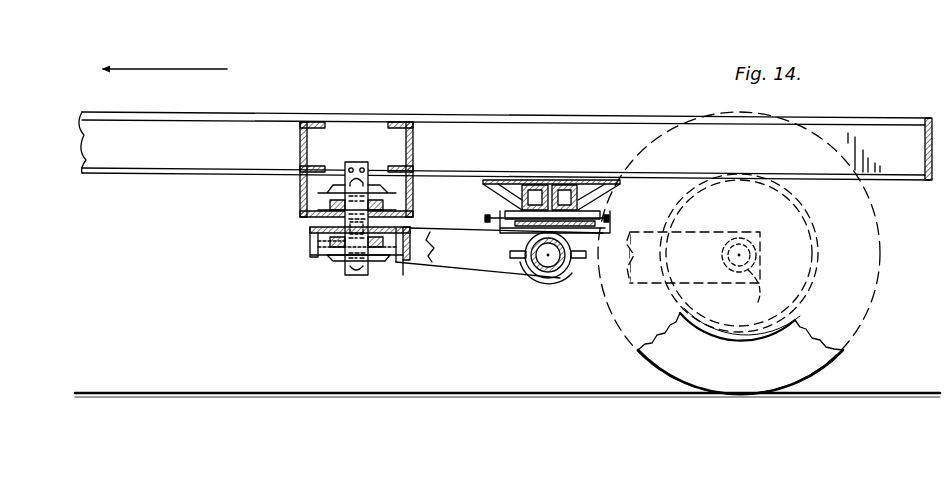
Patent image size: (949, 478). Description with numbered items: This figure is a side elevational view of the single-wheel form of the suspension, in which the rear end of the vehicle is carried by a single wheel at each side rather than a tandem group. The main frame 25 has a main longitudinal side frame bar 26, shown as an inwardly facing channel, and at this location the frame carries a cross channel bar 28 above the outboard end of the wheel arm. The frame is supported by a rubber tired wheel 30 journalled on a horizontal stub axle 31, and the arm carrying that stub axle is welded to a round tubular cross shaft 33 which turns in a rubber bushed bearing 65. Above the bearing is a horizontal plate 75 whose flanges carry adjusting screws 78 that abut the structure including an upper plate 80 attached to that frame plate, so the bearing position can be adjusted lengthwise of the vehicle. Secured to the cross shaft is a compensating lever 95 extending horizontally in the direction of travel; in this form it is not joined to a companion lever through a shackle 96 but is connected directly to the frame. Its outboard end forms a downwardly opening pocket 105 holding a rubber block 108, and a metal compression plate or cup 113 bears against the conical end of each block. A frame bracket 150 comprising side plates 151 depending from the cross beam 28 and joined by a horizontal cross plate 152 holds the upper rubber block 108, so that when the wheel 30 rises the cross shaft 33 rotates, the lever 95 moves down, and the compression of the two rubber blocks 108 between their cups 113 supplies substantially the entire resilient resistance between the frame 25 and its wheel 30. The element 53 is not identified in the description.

The main frame 25 is at (199, 111).
The main longitudinal side frame bars 26 is at (104, 172).
The cross channel bars 28 is at (392, 126).
The rubber tired wheels 30 is at (835, 367).
The stub axle 31 is at (752, 288).
The cross shaft 33 is at (574, 268).
The carriage blocks 53 is at (540, 182).
The bearing 65 is at (532, 273).
The horizontal plate 75 is at (610, 210).
The adjusting screw 78 is at (485, 220).
The upper plate 80 is at (520, 207).
The compensating lever 95 is at (482, 281).
The shackle 96 is at (366, 278).
The downwardly opening pocket 105 is at (405, 262).
The rubber block 108 is at (324, 201).
The compression plate or cup 113 is at (377, 176).
The frame bracket 150 is at (300, 150).
The side plates 151 is at (300, 184).
The horizontal cross plate 152 is at (310, 229).